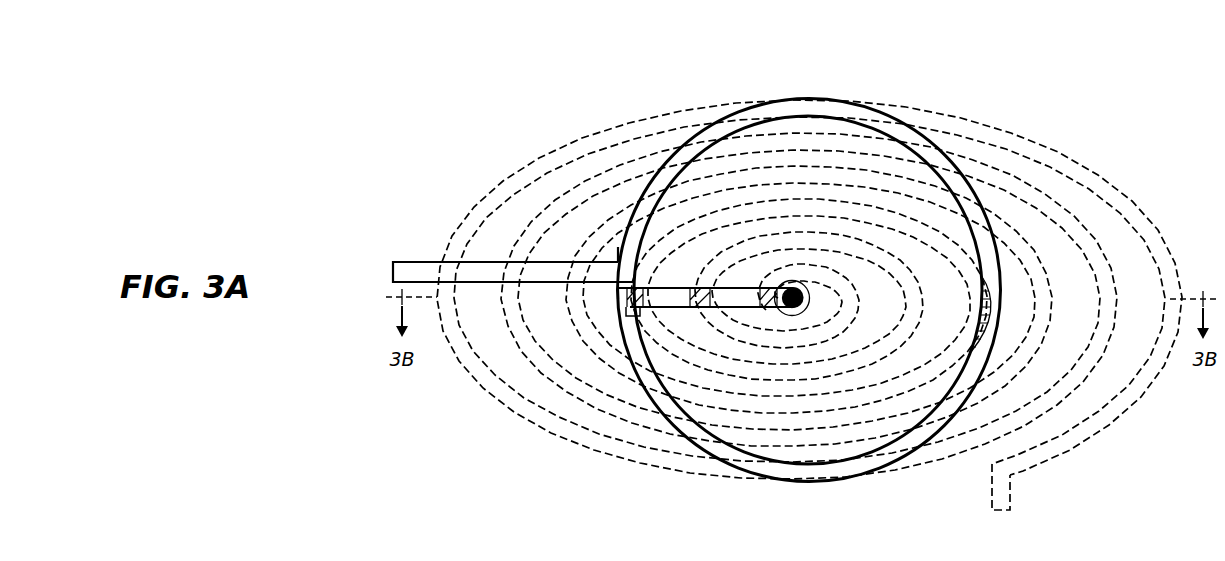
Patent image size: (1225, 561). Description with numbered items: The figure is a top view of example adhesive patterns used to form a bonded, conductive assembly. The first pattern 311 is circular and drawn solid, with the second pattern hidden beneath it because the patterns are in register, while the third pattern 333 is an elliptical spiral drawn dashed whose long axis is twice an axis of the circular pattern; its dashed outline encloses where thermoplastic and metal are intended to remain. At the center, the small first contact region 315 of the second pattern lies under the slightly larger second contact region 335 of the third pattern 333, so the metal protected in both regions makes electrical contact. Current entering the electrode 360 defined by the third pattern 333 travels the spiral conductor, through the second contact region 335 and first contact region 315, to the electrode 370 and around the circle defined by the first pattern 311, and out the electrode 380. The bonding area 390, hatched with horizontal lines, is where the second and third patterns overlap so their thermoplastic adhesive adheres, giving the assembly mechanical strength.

The first pattern 311 is at (882, 99).
The first contact region 315 is at (792, 310).
The third pattern 333 is at (500, 186).
The second contact region 335 is at (806, 312).
The electrode 360 is at (1010, 498).
The electrode 370 is at (692, 446).
The electrode 380 is at (413, 262).
The bonding area 390 is at (993, 292).